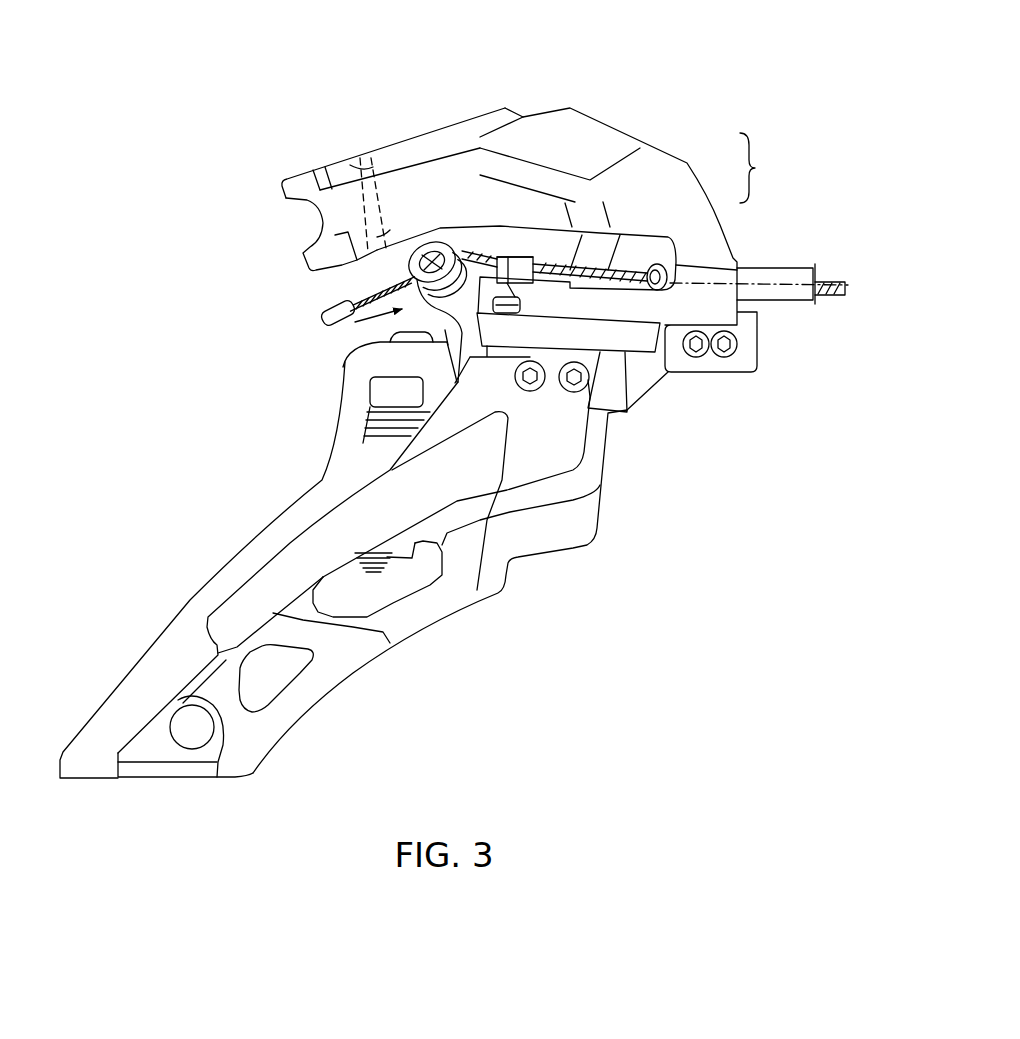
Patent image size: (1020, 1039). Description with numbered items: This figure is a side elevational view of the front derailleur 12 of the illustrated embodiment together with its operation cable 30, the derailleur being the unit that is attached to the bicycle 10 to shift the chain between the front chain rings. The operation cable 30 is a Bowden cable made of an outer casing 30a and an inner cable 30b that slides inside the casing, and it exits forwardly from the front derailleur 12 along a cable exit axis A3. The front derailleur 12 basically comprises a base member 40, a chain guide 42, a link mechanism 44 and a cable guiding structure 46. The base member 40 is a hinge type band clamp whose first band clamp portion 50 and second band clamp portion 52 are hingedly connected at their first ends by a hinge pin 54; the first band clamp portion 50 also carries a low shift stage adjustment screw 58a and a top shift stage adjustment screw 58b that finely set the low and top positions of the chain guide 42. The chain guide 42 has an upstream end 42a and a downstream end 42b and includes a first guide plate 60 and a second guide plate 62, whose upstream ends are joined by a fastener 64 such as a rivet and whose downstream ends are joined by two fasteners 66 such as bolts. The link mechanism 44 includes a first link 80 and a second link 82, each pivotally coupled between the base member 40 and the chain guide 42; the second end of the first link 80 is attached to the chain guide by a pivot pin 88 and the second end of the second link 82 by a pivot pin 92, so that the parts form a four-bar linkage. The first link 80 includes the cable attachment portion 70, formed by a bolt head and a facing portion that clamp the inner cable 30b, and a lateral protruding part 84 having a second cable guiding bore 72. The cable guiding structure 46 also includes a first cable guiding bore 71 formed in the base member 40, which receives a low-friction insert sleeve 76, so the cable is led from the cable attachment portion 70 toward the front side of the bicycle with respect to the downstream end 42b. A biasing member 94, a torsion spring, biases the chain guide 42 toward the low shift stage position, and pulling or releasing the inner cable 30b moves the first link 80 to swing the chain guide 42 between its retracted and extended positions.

The bicycle 10 is at (173, 248).
The front derailleur 12 is at (596, 55).
The operation cable 30 is at (762, 260).
The outer casing 30a is at (800, 266).
The inner cable 30b is at (823, 276).
The base member 40 is at (617, 118).
The chain guide 42 is at (266, 505).
The upstream end 42a is at (66, 722).
The downstream end 42b is at (620, 464).
The link mechanism 44 is at (348, 334).
The cable guiding structure 46 is at (765, 168).
The first band clamp portion 50 is at (448, 124).
The second band clamp portion 52 is at (297, 177).
The hinge pin 54 is at (387, 148).
The low shift stage adjustment screw 58a is at (718, 360).
The top shift stage adjustment screw 58b is at (680, 360).
The first guide plate 60 is at (222, 580).
The second guide plate 62 is at (425, 612).
The fastener 64 is at (190, 732).
The fasteners 66 is at (570, 392).
The cable attachment portion 70 is at (443, 238).
The first cable guiding bore 71 is at (662, 250).
The second cable guiding bore 72 is at (530, 251).
The insert sleeve 76 is at (647, 300).
The first link 80 is at (447, 347).
The second link 82 is at (607, 382).
The lateral protruding part 84 is at (511, 249).
The pivot pin 88 is at (370, 574).
The pivot pin 92 is at (520, 291).
The biasing member 94 is at (373, 417).
The cable exit axis A3 is at (788, 300).